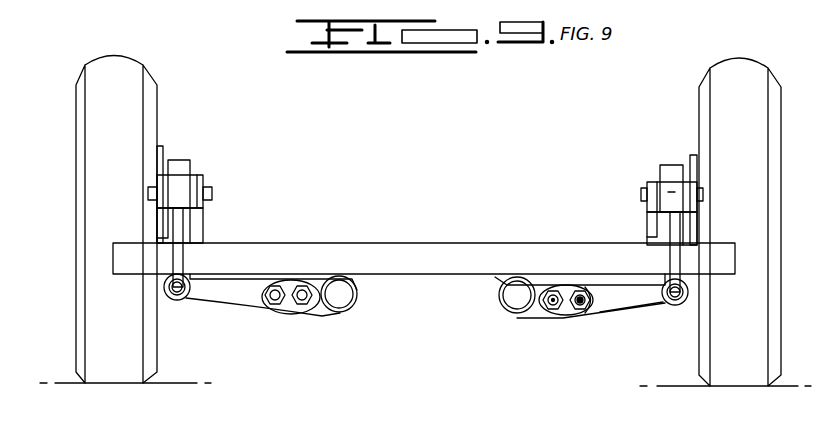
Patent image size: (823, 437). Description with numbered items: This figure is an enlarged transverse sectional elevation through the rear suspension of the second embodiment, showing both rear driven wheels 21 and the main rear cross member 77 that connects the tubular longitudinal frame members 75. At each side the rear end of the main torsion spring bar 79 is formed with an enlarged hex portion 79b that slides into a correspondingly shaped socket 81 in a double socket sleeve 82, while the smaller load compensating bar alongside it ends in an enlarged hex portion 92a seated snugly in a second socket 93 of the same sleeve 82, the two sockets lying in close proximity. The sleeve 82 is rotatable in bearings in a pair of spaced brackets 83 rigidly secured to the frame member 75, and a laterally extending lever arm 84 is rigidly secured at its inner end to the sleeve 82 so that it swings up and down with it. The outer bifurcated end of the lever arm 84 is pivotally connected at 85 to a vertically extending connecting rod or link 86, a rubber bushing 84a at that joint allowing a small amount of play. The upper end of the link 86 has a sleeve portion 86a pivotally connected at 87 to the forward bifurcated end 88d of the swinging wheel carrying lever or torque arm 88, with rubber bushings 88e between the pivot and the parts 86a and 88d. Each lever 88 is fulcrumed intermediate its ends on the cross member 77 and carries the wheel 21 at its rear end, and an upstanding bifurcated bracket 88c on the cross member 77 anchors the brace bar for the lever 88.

The rear driven wheel 21 is at (137, 100).
The longitudinal sill or frame member 75 is at (358, 304).
The main rear cross member 77 is at (402, 249).
The main torsion spring bar 79 is at (305, 304).
The enlarged hex portion 79b is at (560, 312).
The socket 81 is at (580, 298).
The double socket sleeve 82 is at (290, 305).
The bracket 83 is at (535, 316).
The lever arm 84 is at (222, 298).
The rubber bushing 84a is at (682, 307).
The pivotal connection 85 is at (176, 301).
The connecting rod or link 86 is at (178, 225).
The sleeve portion 86a is at (675, 193).
The pivotal connection 87 is at (641, 193).
The wheel carrying lever or torque arm 88 is at (180, 160).
The upstanding bifurcated bracket 88c is at (657, 182).
The forward bifurcated end 88d is at (647, 182).
The rubber bushing 88e is at (692, 170).
The enlarged hex portion 92a is at (593, 300).
The socket 93 is at (592, 296).